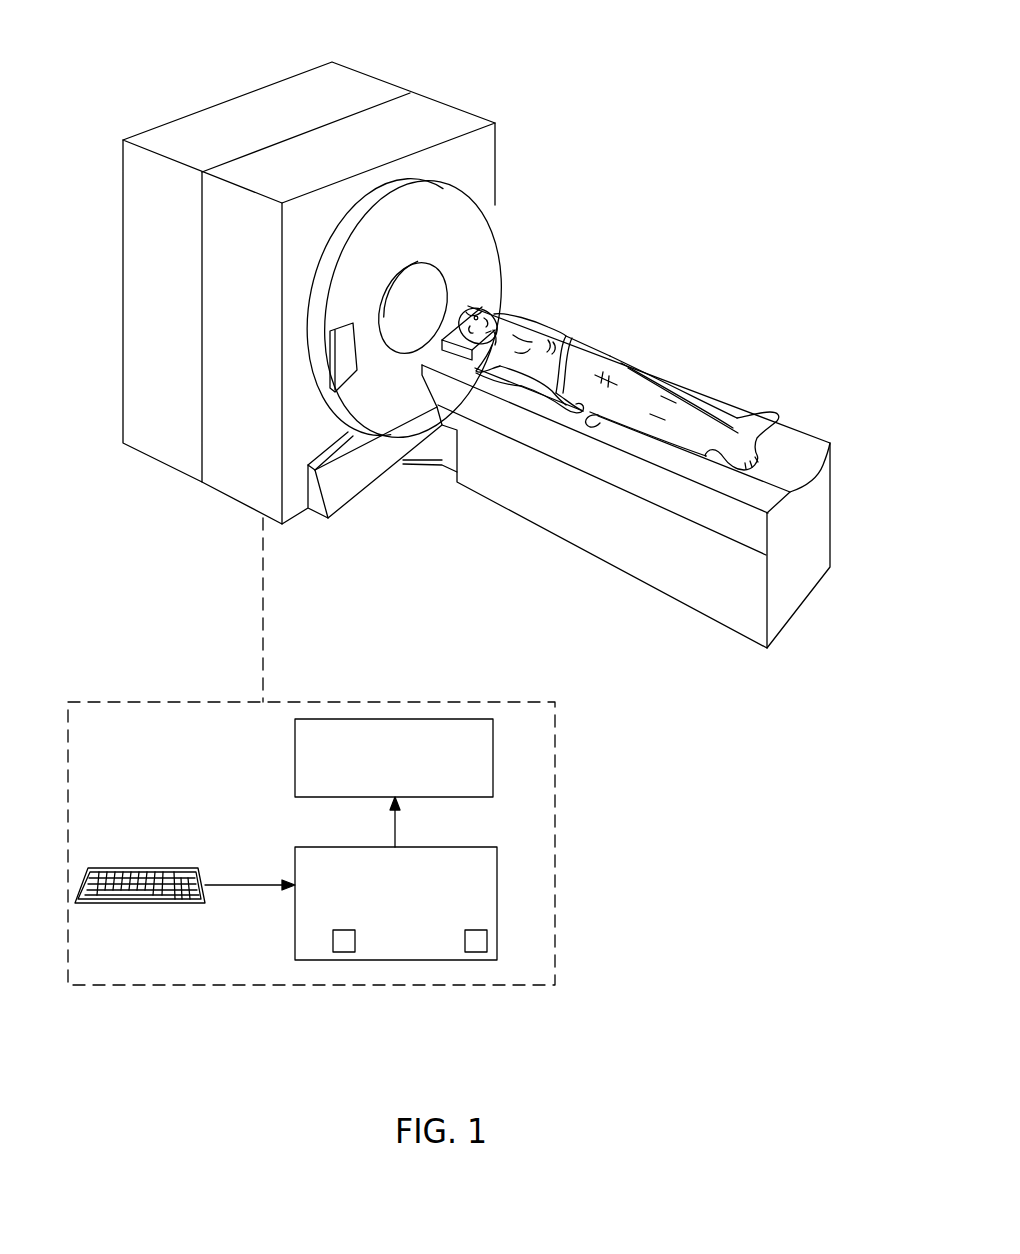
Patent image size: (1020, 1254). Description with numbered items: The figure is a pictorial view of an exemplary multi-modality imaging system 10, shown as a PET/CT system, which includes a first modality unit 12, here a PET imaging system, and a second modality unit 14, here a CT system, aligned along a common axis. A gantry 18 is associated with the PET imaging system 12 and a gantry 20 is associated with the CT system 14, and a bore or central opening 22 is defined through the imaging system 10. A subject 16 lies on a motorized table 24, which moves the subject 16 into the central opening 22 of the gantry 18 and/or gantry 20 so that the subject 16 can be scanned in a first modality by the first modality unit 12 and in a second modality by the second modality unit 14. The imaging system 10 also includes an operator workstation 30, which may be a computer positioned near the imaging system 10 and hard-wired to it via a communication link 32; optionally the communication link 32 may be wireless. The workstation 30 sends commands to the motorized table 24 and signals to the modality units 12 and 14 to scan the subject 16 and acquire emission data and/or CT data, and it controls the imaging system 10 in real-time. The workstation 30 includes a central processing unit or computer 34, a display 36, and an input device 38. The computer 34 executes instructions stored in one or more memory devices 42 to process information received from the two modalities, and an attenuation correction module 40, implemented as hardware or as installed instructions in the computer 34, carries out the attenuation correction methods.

The imaging system 10 is at (762, 80).
The first modality unit 12 is at (232, 482).
The second modality unit 14 is at (163, 443).
The subject 16 is at (565, 346).
The gantry 18 is at (482, 155).
The gantry 20 is at (218, 122).
The bore 22 is at (390, 298).
The motorized table 24 is at (592, 528).
The operator workstation 30 is at (90, 700).
The communication link 32 is at (266, 571).
The computer 34 is at (295, 857).
The display 36 is at (295, 758).
The input device 38 is at (133, 867).
The attenuation correction module 40 is at (474, 953).
The memory devices 42 is at (343, 953).